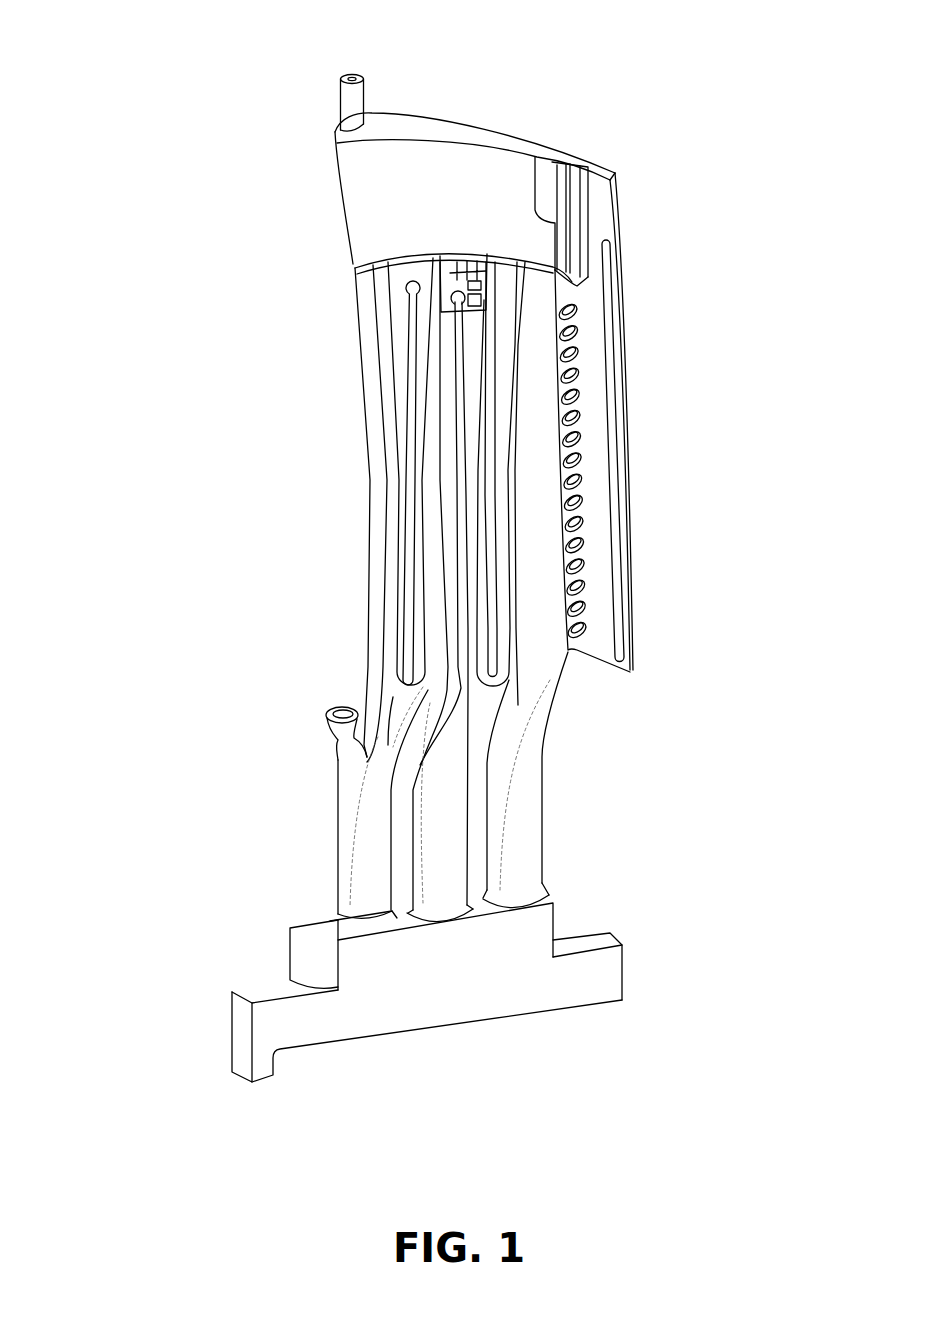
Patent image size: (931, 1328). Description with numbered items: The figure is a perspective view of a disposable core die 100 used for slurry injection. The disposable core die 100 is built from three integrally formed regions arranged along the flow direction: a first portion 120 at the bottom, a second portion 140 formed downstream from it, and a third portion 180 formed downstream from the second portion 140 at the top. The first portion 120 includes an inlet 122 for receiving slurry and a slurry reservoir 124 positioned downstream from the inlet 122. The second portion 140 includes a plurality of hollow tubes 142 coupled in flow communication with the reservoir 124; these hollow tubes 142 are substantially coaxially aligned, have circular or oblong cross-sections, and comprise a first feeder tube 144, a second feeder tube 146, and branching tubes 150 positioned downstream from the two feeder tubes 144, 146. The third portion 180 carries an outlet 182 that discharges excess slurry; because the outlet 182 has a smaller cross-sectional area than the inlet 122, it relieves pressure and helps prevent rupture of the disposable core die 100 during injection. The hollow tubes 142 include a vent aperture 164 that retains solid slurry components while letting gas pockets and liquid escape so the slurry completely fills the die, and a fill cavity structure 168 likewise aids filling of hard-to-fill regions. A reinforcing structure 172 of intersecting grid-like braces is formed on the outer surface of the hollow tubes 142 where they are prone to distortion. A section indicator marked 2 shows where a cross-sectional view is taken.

The disposable core die 100 is at (180, 72).
The first portion 120 is at (665, 1018).
The inlet 122 is at (258, 1068).
The slurry reservoir 124 is at (598, 966).
The second portion 140 is at (665, 272).
The hollow tubes 142 is at (250, 543).
The first feeder tube 144 is at (360, 858).
The second feeder tube 146 is at (448, 816).
The branching tubes 150 is at (335, 705).
The vent aperture 164 is at (435, 580).
The fill cavity structure 168 is at (327, 713).
The reinforcing structure 172 is at (455, 265).
The third portion 180 is at (665, 165).
The outlet 182 is at (358, 93).
The section line 2- 2 is at (360, 407).